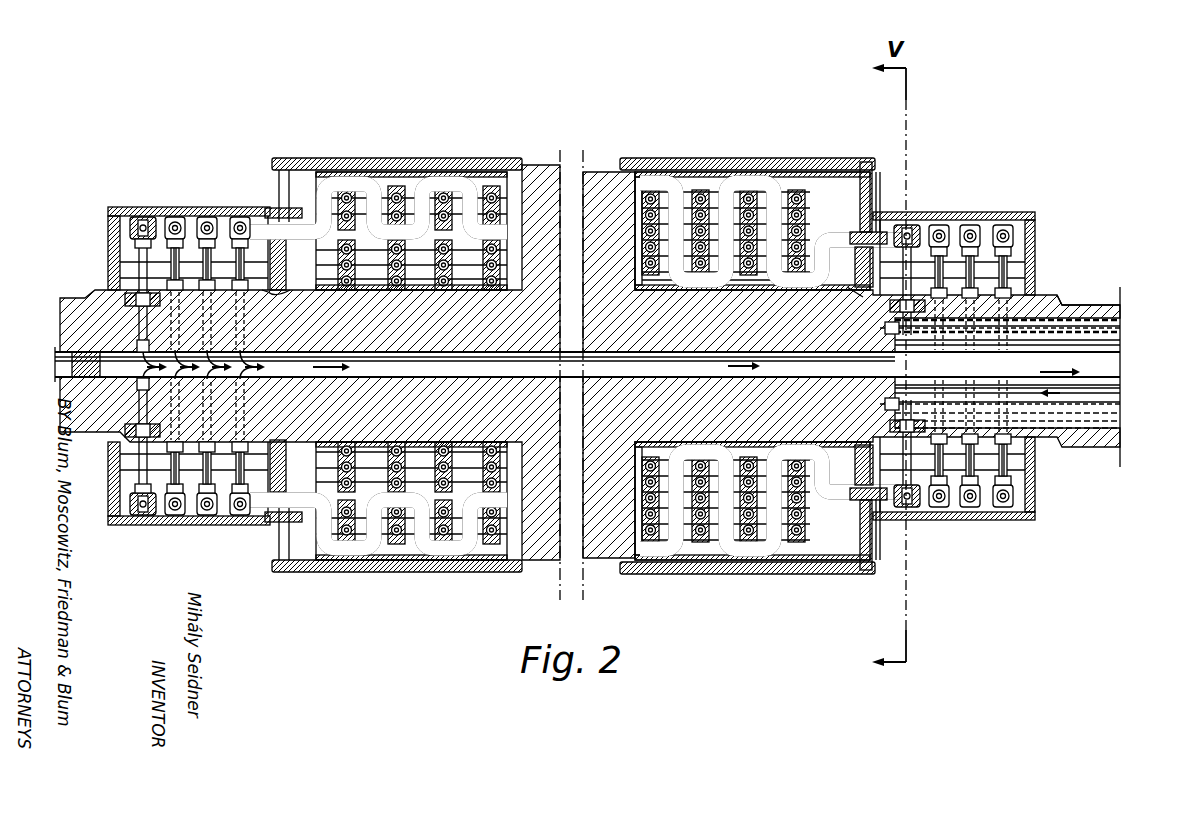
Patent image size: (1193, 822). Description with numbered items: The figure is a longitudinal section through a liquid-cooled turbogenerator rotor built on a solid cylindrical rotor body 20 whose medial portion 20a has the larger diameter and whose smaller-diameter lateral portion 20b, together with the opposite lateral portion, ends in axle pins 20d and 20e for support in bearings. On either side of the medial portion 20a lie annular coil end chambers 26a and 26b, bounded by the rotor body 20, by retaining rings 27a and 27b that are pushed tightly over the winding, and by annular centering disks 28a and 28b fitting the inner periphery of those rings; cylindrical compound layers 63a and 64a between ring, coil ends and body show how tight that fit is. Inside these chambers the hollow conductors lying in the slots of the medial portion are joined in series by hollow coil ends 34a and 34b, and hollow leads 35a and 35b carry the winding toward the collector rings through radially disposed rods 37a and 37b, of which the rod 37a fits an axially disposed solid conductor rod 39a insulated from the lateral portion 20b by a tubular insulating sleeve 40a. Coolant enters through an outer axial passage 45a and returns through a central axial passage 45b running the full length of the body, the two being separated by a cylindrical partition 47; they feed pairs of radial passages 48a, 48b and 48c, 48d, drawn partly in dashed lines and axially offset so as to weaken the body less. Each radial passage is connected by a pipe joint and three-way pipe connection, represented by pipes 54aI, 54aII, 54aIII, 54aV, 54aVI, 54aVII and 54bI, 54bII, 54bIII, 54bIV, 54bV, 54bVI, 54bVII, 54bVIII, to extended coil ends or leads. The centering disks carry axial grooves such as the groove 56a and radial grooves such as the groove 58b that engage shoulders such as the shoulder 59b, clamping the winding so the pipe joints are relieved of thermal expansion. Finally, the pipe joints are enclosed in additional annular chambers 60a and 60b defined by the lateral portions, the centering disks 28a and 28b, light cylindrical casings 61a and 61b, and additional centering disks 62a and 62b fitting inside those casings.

The rotor body 20 is at (605, 172).
The medial portion 20a is at (560, 333).
The lateral portion 20b is at (1080, 300).
The axle pin 20d is at (1120, 318).
The axle pin 20e is at (60, 298).
The annular coil end chamber 26a is at (826, 180).
The annular coil end chamber 26b is at (316, 190).
The retaining ring 27a is at (715, 158).
The retaining ring 27b is at (400, 158).
The annular centering disk 28a is at (870, 292).
The annular centering disk 28b is at (286, 290).
The coil end 34a is at (645, 290).
The coil end 34b is at (466, 285).
The hollow lead 35a is at (820, 200).
The hollow lead 35b is at (826, 545).
The radially disposed rod 37a is at (908, 225).
The radially disposed rod 37b is at (907, 507).
The solid conductor rod 39a is at (1120, 346).
The tubular insulating sleeve 40a is at (1120, 330).
The axial passage 45a is at (1120, 378).
The axial passage 45b is at (1120, 408).
The cylindrical partition 47 is at (1120, 392).
The radial passage 48a is at (885, 330).
The radial passage 48b is at (885, 404).
The radial passage 48c is at (140, 340).
The radial passage 48d is at (140, 396).
The pipe 54aI is at (939, 225).
The pipe 54aII is at (970, 225).
The pipe 54aIII is at (1003, 225).
The pipe 54aV is at (1003, 507).
The pipe 54aVI is at (970, 507).
The pipe 54aVII is at (939, 507).
The pipe 54bI is at (240, 222).
The pipe 54bII is at (207, 222).
The pipe 54bIII is at (175, 222).
The pipe 54bIV is at (143, 217).
The pipe 54bV is at (240, 515).
The pipe 54bVI is at (207, 515).
The pipe 54bVII is at (175, 515).
The pipe 54bVIII is at (143, 515).
The axial groove 56a is at (876, 185).
The radial groove 58b is at (280, 200).
The shoulder 59b is at (286, 255).
The additional annular chamber 60a is at (1020, 240).
The additional annular chamber 60b is at (125, 235).
The cylindrical casing 61a is at (1035, 216).
The cylindrical casing 61b is at (108, 211).
The additional centering disk 62a is at (1035, 275).
The additional centering disk 62b is at (110, 272).
The cylindrical compound layer 63a is at (640, 180).
The cylindrical compound layer 64a is at (705, 290).